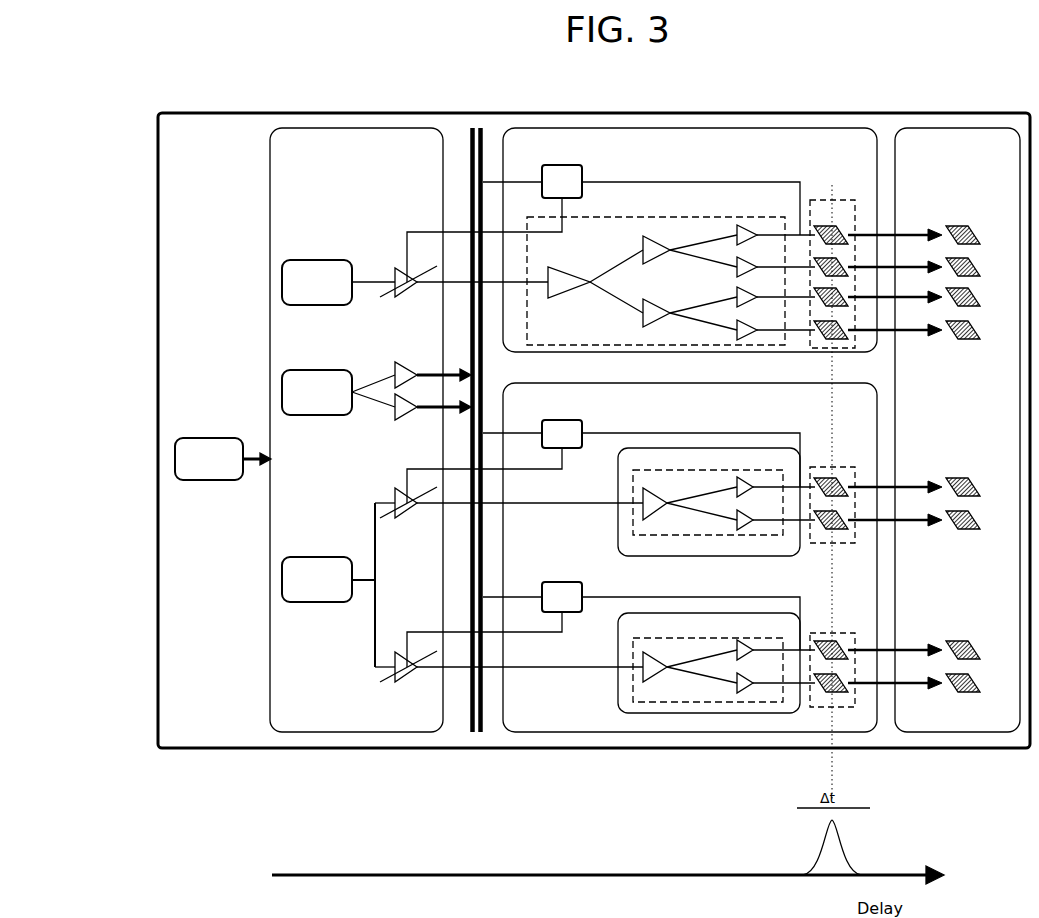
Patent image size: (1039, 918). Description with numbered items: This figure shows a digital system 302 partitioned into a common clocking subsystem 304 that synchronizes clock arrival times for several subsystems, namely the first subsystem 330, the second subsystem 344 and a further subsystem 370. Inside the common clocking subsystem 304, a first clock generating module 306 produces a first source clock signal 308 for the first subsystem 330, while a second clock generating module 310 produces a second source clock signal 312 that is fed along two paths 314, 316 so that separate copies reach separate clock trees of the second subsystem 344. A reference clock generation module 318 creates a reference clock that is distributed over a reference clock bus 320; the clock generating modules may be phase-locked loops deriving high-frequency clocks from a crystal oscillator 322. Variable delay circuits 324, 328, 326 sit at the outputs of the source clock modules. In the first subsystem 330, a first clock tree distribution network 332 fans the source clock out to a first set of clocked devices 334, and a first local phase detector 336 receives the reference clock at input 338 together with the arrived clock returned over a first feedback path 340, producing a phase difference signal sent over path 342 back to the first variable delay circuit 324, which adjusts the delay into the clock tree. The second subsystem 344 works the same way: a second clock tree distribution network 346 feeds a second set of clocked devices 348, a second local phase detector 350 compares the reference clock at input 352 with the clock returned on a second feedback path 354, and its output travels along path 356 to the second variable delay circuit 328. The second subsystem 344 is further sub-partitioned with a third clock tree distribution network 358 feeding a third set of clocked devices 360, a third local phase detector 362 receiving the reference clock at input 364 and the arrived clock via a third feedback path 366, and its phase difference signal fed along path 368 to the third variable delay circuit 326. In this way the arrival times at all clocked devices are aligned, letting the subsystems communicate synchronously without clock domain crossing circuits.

The digital system 302 is at (594, 430).
The common clocking subsystem 304 is at (356, 430).
The first clock generating module 306 is at (282, 282).
The first source clock signal 308 is at (355, 276).
The second clock generating module 310 is at (282, 580).
The second source clock signal 312 is at (360, 575).
The first path 314 is at (376, 500).
The second path 316 is at (376, 672).
The reference clock generation module 318 is at (282, 392).
The reference clock bus 320 is at (473, 128).
The crystal oscillator 322 is at (175, 452).
The first variable delay circuit 324 is at (417, 297).
The third variable delay circuit 326 is at (417, 682).
The second variable delay circuit 328 is at (417, 518).
The first subsystem 330 is at (690, 240).
The first clock tree distribution network 332 is at (676, 217).
The first set of clocked devices 334 is at (822, 201).
The first local phase detector 336 is at (565, 165).
The reference clock signal input 338 is at (548, 166).
The first feedback path 340 is at (692, 183).
The first phase difference signal path 342 is at (562, 205).
The second subsystem 344 is at (690, 557).
The second clock tree distribution network 346 is at (740, 473).
The second set of clocked devices 348 is at (826, 462).
The second local phase detector 350 is at (565, 420).
The reference clock signal input 352 is at (547, 421).
The second feedback path 354 is at (685, 433).
The second phase difference signal path 356 is at (562, 475).
The third clock tree distribution network 358 is at (740, 640).
The third set of clocked devices 360 is at (826, 620).
The third local phase detector 362 is at (565, 582).
The reference clock signal input 364 is at (547, 584).
The third feedback path 366 is at (685, 597).
The third phase difference signal path 368 is at (562, 640).
The subsystem 370 is at (957, 430).